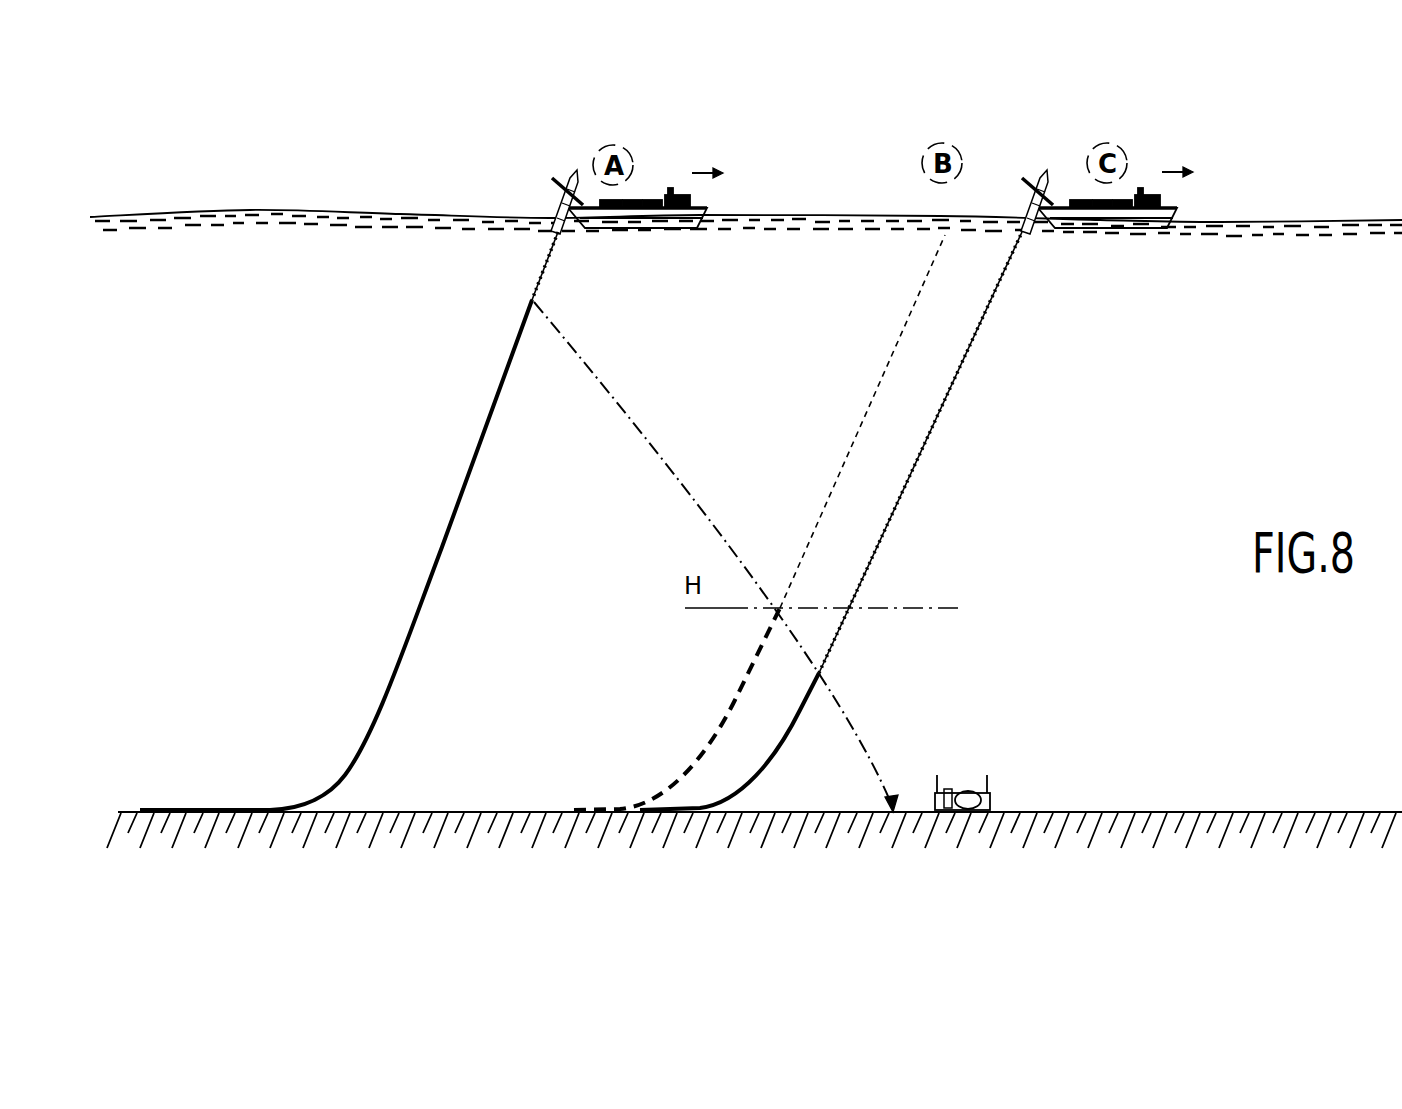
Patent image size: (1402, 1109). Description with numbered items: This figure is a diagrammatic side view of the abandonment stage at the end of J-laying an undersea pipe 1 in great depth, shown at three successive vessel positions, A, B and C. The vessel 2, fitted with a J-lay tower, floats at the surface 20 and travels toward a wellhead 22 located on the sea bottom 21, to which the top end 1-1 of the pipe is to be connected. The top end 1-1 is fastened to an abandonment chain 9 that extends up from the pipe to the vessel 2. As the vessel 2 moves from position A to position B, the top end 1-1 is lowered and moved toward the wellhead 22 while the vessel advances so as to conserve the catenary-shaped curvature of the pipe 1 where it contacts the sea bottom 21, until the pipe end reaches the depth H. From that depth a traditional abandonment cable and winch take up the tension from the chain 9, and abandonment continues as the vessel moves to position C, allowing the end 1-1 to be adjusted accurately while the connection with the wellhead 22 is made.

The sea surface 20 is at (242, 212).
The vessel 2 is at (647, 226).
The abandonment chain 9 is at (548, 262).
The top end of the pipe 1-1 is at (530, 300).
The pipe 1 is at (440, 548).
The sea bottom 21 is at (478, 810).
The wellhead 22 is at (968, 790).